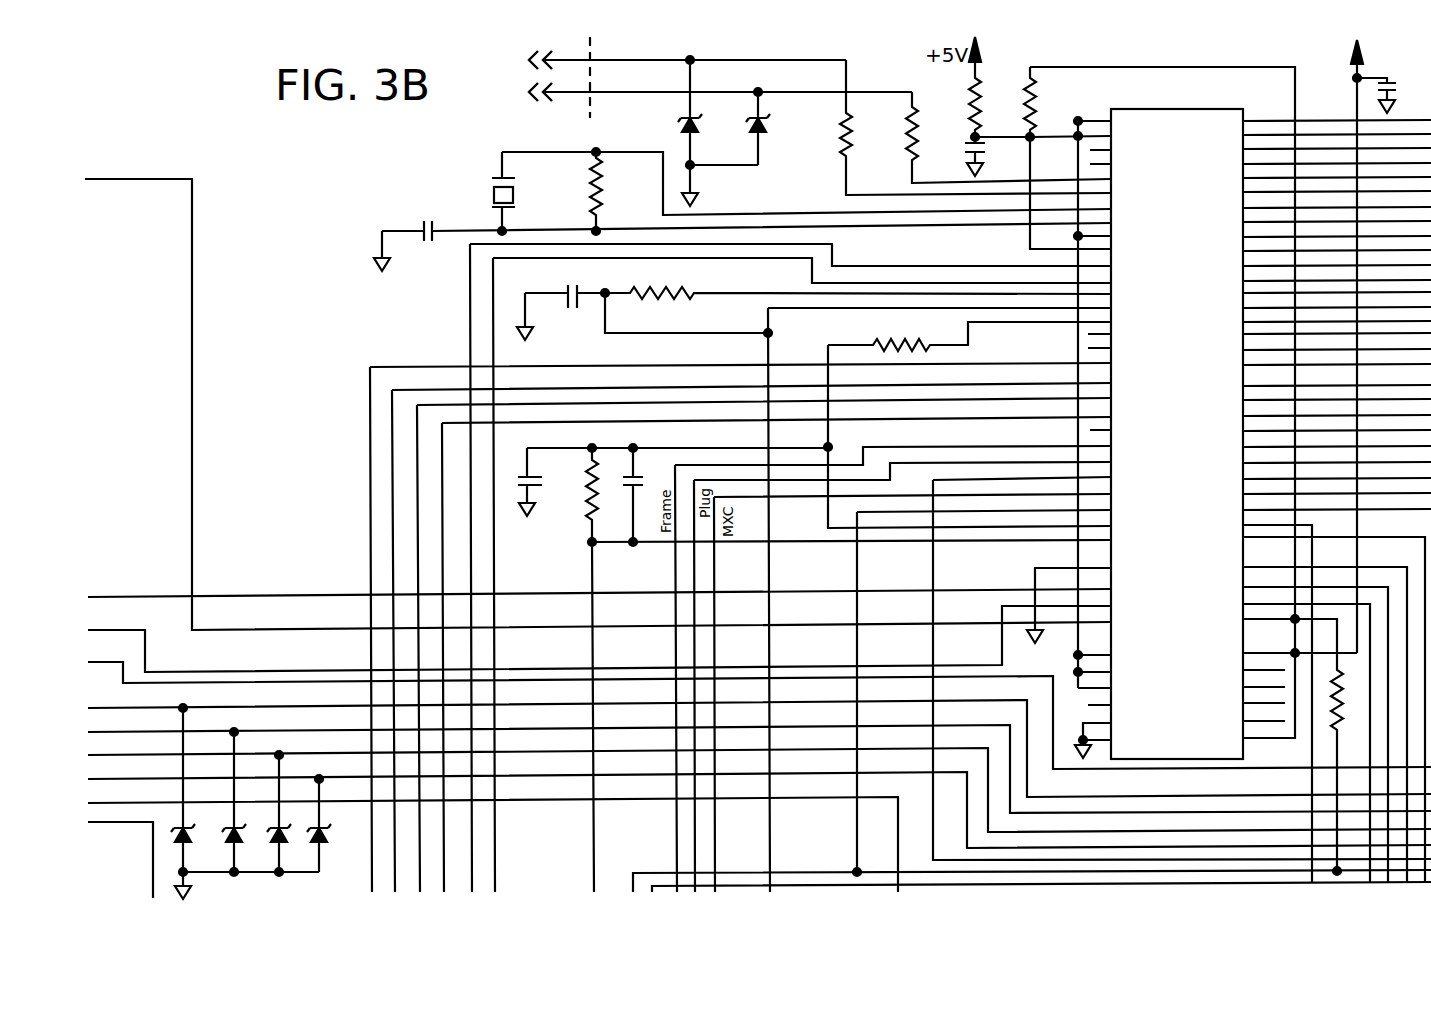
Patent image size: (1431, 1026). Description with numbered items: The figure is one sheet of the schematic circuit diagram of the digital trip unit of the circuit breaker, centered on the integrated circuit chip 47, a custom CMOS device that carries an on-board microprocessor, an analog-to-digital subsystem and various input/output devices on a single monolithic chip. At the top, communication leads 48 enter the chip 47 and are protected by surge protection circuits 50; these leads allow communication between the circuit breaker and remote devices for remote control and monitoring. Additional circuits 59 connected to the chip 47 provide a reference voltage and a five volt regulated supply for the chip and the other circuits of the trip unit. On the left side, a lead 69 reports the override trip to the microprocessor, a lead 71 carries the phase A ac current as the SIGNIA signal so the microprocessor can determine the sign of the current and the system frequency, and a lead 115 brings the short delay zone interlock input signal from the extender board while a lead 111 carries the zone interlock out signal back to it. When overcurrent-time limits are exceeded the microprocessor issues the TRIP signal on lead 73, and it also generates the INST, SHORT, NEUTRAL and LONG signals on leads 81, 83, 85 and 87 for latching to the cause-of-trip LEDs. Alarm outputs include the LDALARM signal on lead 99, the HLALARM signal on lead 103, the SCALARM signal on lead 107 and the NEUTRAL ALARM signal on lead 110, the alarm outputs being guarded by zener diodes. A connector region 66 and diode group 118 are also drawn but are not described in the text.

The integrated circuit chip 47 is at (1160, 108).
The leads 48 is at (617, 63).
The surge protection circuits 50 is at (872, 74).
The additional circuits 59 is at (554, 541).
The connector 66 is at (152, 847).
The lead 69 is at (234, 597).
The lead 71 is at (104, 633).
The lead 73 is at (523, 801).
The lead 81 is at (1368, 706).
The lead 83 is at (1375, 586).
The lead 85 is at (1373, 566).
The lead 87 is at (1425, 560).
The lead 99 is at (515, 707).
The lead 103 is at (203, 779).
The lead 107 is at (257, 755).
The lead 110 is at (307, 732).
The lead 111 is at (112, 663).
The lead 115 is at (192, 270).
The zener protection diodes 118 is at (264, 888).